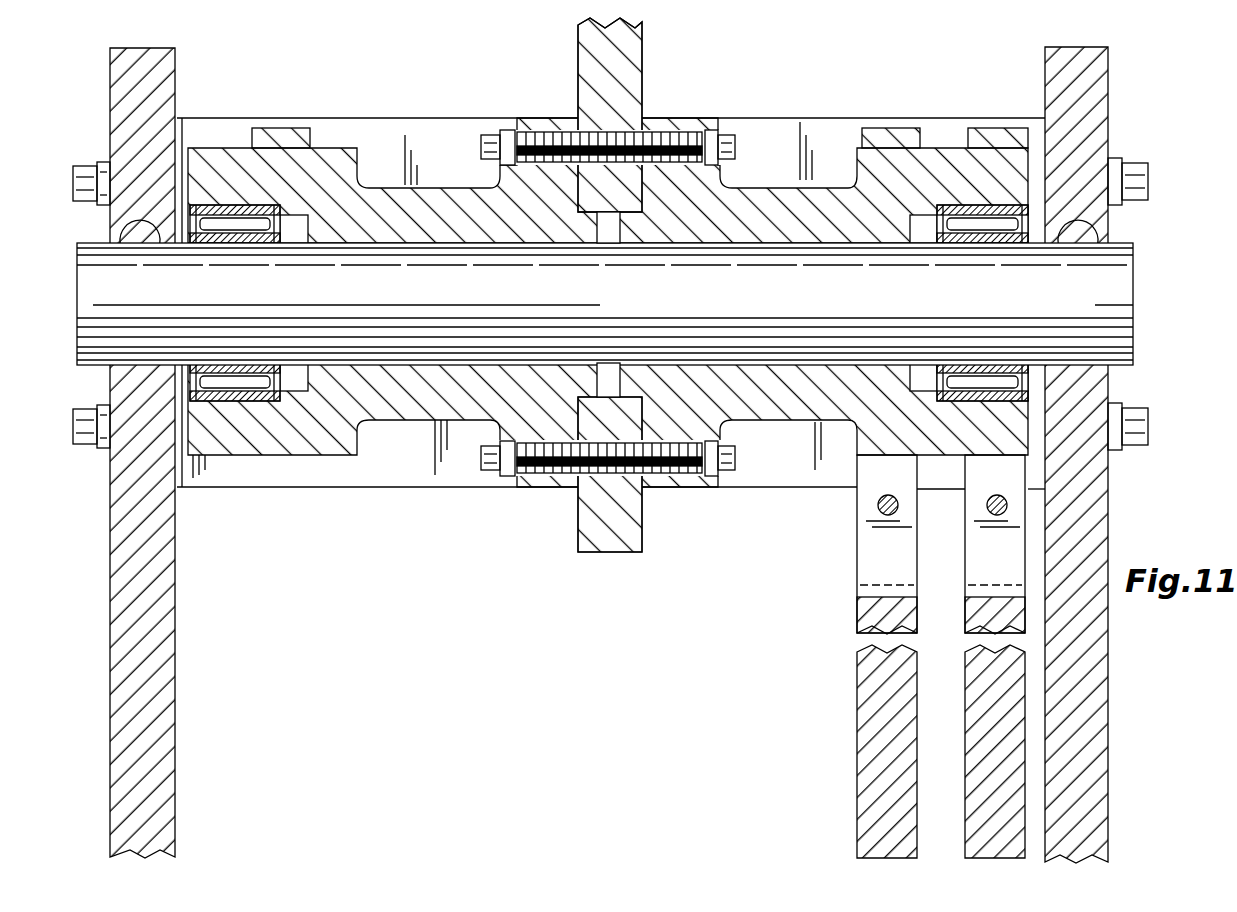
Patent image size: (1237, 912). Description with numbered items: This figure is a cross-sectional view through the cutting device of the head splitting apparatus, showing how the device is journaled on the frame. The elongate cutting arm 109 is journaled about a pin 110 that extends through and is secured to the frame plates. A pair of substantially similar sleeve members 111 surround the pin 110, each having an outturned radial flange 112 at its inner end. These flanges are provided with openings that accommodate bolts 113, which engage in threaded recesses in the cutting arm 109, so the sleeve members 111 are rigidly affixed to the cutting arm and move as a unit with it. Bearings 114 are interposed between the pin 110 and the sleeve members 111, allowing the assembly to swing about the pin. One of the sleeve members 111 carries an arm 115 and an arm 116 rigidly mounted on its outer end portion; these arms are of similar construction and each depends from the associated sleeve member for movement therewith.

The cutting arm 109 is at (628, 78).
The pin 110 is at (1124, 287).
The sleeve member 111 is at (440, 425).
The outturned radial flange 112 is at (545, 472).
The bolt 113 is at (722, 146).
The bearing 114 is at (230, 387).
The arm 115 is at (966, 851).
The arm 116 is at (862, 744).